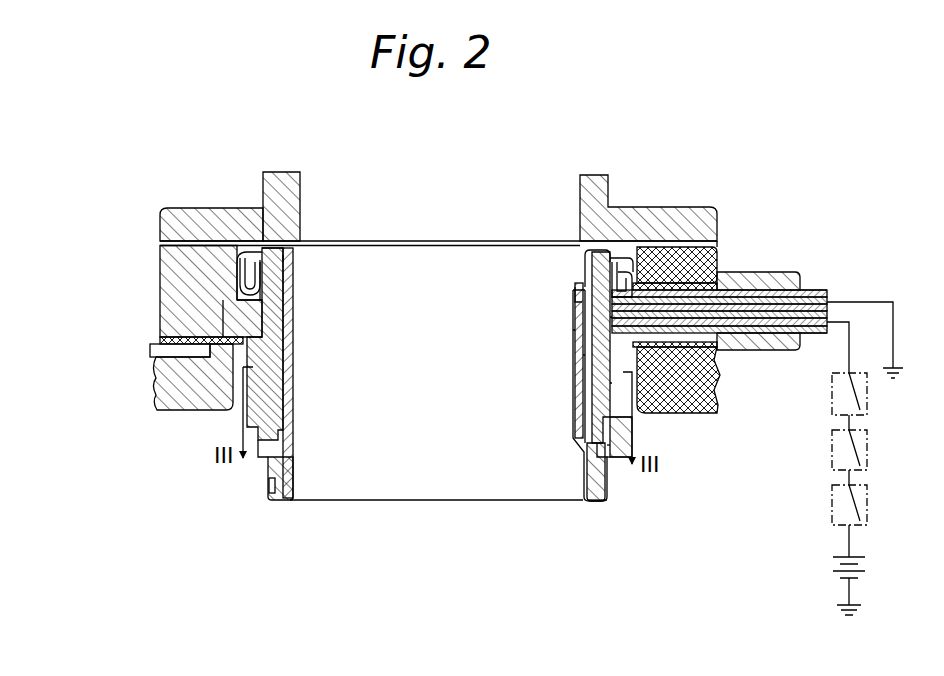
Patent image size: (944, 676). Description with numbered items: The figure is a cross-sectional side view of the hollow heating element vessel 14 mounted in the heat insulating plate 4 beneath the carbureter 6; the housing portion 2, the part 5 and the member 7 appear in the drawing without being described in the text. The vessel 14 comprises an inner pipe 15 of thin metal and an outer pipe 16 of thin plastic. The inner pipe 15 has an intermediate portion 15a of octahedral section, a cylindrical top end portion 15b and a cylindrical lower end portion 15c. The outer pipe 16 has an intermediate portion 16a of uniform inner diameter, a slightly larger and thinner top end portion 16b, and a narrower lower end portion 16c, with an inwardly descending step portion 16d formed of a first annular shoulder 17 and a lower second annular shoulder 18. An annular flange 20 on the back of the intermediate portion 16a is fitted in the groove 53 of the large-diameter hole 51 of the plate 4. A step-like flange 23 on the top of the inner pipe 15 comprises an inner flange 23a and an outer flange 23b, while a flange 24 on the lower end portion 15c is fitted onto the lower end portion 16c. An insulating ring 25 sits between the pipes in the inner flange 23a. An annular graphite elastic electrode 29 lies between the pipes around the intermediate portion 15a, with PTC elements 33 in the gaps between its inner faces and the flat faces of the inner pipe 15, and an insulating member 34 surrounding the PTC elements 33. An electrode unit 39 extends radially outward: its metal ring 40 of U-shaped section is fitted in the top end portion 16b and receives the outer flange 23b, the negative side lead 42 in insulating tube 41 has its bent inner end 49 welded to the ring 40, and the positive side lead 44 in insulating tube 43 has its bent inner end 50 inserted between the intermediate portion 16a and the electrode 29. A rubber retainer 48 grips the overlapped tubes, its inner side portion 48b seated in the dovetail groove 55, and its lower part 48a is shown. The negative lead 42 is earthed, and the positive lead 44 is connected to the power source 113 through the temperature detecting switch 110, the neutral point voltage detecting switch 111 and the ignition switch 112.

The housing 2 is at (153, 390).
The heat insulating plate 4 is at (170, 278).
The gasket 5 is at (153, 343).
The carbureter 6 is at (630, 217).
The flange 7 is at (160, 243).
The hollow heating element vessel 14 is at (265, 502).
The inner pipe 15 is at (570, 428).
The intermediate portion 15a is at (574, 340).
The cylindrical top end portion 15b is at (584, 266).
The cylindrical lower end portion 15c is at (583, 478).
The outer pipe 16 is at (622, 458).
The intermediate portion 16a is at (612, 413).
The top end portion 16b is at (235, 275).
The lower end portion 16c is at (592, 503).
The step portion 16d is at (608, 422).
The first annular shoulder 17 is at (612, 418).
The second annular shoulder 18 is at (608, 452).
The annular flange 20 is at (237, 333).
The step-like flange 23 is at (243, 245).
The inner flange 23a is at (280, 248).
The outer flange 23b is at (240, 258).
The flange 24 is at (608, 504).
The insulating ring 25 is at (290, 270).
The elastic electrode 29 is at (273, 402).
The PTC element 33 is at (582, 362).
The insulating member 34 is at (283, 343).
The electrode unit 39 is at (742, 263).
The metal ring 40 is at (290, 260).
The insulating tube 41 is at (828, 291).
The negative side lead 42 is at (803, 290).
The insulating tube 43 is at (818, 340).
The positive side lead 44 is at (808, 347).
The retainer 48 is at (778, 273).
The sleeve lower portion 48a is at (742, 348).
The inner side portion 48b is at (718, 262).
The inner end 49 is at (598, 317).
The inner end 50 is at (608, 383).
The large-diameter hole 51 is at (665, 218).
The groove 53 is at (237, 323).
The dovetail groove 55 is at (720, 240).
The temperature detecting switch 110 is at (862, 398).
The neutral point voltage detecting switch 111 is at (862, 453).
The ignition switch 112 is at (862, 508).
The power source 113 is at (865, 570).